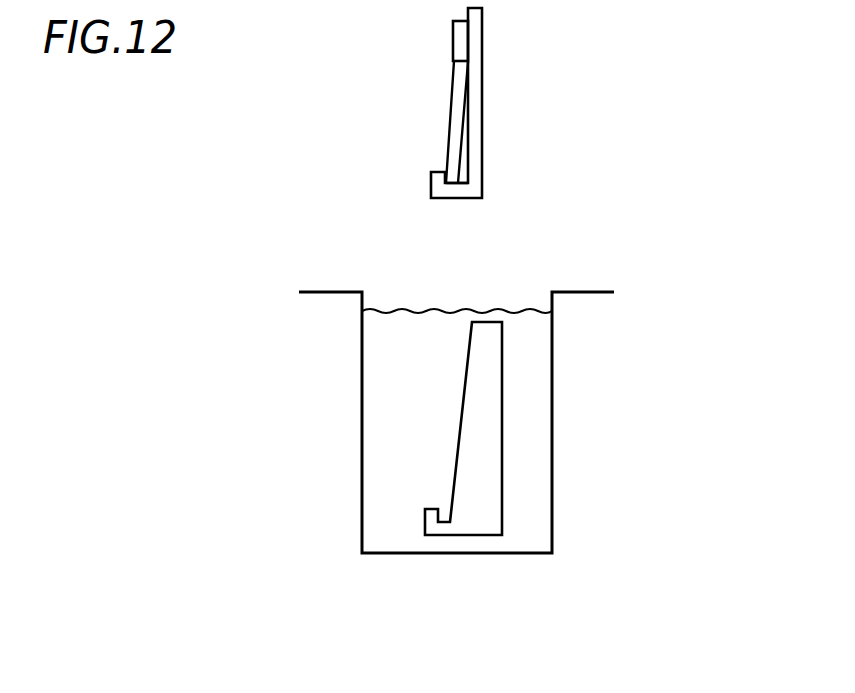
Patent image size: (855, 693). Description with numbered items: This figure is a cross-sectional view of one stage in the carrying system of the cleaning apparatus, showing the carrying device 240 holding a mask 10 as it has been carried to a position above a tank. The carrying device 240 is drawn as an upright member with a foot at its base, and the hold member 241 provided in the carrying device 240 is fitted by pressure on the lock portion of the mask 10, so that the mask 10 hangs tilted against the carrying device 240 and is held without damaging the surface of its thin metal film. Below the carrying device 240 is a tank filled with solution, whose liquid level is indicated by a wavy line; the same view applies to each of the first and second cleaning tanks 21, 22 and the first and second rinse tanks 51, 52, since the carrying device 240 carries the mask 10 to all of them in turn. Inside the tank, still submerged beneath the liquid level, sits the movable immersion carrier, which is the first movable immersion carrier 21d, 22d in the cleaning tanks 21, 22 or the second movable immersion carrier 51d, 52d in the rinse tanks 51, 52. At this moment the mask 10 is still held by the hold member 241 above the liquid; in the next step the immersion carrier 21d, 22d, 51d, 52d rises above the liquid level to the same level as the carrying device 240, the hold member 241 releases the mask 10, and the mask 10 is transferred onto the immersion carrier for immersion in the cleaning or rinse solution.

The mask 10 is at (458, 98).
The carrying device 240 is at (478, 40).
The hold member 241 is at (459, 34).
The first cleaning tank 21 is at (531, 422).
The second cleaning tank 22 is at (531, 422).
The first rinse tank 51 is at (531, 422).
The second rinse tank 52 is at (553, 415).
The first movable immersion carrier 21d is at (550, 472).
The first movable immersion carrier 22d is at (550, 472).
The second movable immersion carrier 51d is at (550, 472).
The second movable immersion carrier 52d is at (477, 523).